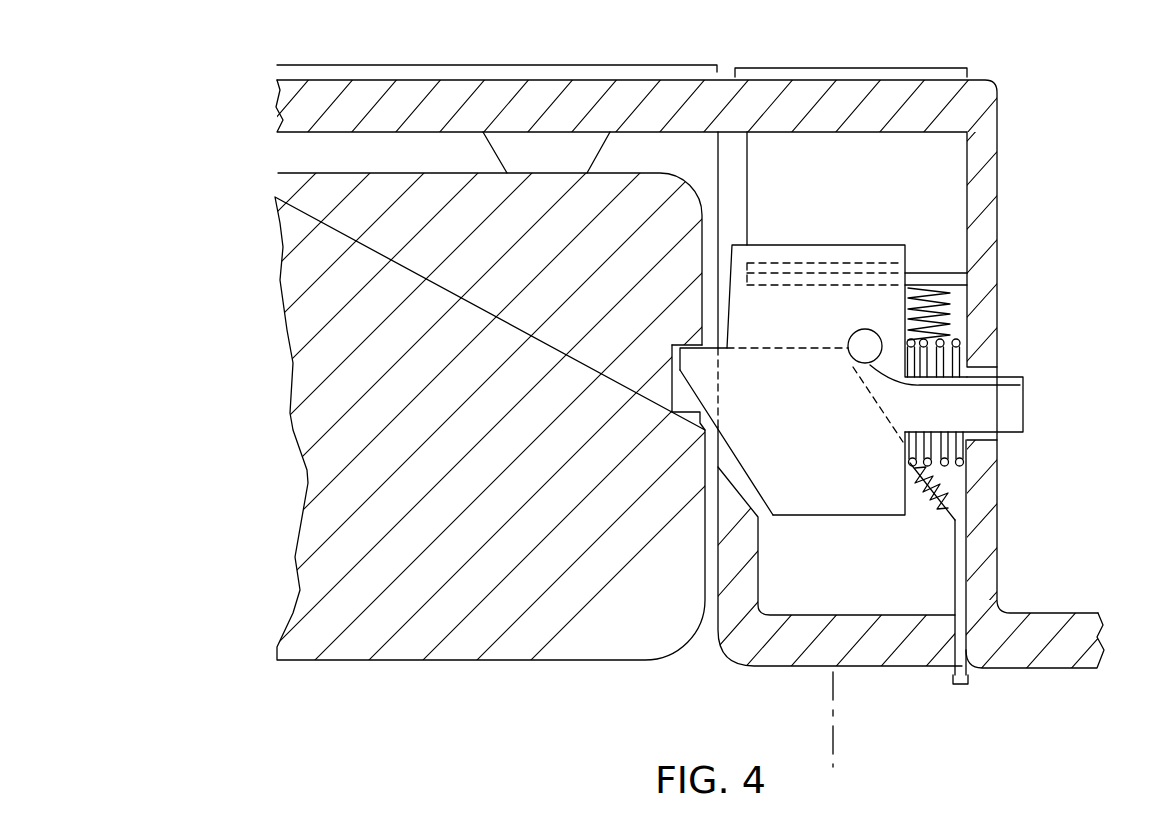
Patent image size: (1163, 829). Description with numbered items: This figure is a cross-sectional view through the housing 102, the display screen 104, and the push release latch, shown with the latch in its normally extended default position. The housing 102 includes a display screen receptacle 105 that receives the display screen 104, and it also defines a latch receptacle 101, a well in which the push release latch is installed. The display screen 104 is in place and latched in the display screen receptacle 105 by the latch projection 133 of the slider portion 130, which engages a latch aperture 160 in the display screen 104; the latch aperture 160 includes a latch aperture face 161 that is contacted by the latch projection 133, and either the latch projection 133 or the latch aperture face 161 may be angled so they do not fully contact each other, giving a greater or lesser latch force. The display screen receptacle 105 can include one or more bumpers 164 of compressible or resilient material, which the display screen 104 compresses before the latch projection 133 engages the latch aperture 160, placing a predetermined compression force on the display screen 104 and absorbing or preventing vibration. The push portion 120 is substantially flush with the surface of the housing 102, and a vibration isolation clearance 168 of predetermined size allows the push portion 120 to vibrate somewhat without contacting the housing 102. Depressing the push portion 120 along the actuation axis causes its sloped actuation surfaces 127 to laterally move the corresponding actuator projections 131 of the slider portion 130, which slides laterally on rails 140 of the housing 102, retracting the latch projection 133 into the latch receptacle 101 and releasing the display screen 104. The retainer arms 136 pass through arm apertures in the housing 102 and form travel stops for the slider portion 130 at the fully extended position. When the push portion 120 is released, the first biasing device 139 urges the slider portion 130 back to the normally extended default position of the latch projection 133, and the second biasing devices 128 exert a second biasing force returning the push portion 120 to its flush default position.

The latch receptacle 101 is at (840, 68).
The housing 102 is at (1073, 668).
The display screen 104 is at (370, 662).
The display screen receptacle 105 is at (477, 65).
The push portion 120 is at (854, 670).
The sloped actuation surfaces 127 is at (952, 518).
The second biasing devices 128 is at (948, 313).
The slider portion 130 is at (880, 242).
The actuator projections 131 is at (1023, 378).
The latch projection 133 is at (673, 412).
The retainer arms 136 is at (1023, 407).
The first biasing device 139 is at (968, 493).
The rails 140 is at (953, 278).
The latch aperture 160 is at (672, 375).
The latch aperture face 161 is at (677, 343).
The bumpers 164 is at (510, 145).
The vibration isolation clearance 168 is at (962, 684).